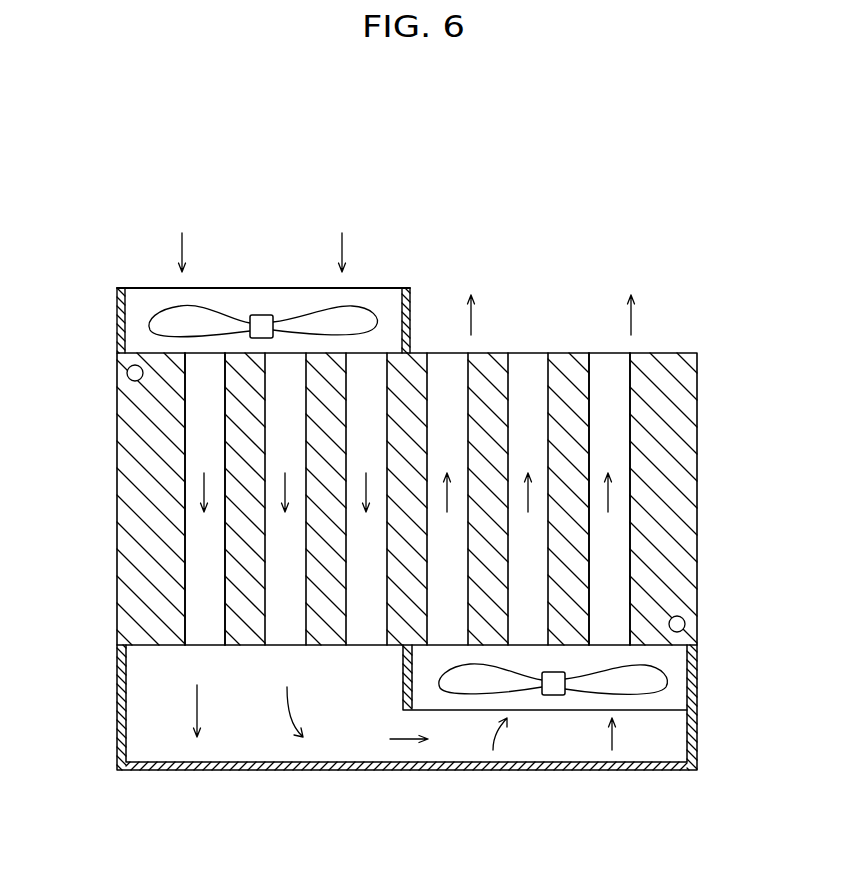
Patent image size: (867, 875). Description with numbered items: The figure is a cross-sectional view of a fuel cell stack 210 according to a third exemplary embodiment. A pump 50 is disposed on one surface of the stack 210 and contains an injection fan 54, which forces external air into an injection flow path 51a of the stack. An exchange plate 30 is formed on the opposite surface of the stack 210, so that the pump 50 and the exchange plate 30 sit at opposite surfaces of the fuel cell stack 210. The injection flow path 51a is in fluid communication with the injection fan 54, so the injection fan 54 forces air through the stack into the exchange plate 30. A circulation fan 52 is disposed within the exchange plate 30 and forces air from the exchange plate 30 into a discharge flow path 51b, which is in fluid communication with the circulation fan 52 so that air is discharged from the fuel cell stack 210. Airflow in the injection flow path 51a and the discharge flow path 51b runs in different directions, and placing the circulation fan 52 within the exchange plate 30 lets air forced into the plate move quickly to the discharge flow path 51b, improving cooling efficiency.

The fuel cell stack 210 is at (421, 160).
The pump 50 is at (415, 298).
The injection fan 54 is at (150, 322).
The injection flow path 51a is at (205, 565).
The discharge flow path 51b is at (610, 570).
The circulation fan 52 is at (655, 677).
The exchange plate 30 is at (243, 770).